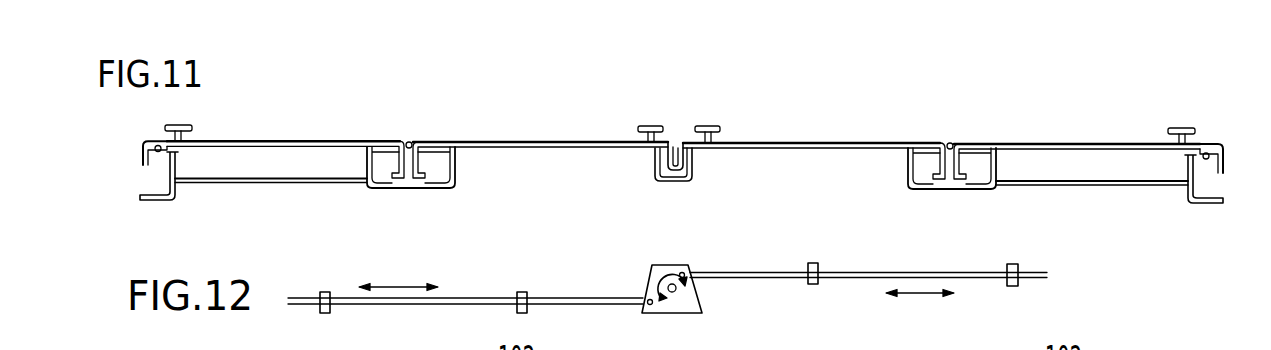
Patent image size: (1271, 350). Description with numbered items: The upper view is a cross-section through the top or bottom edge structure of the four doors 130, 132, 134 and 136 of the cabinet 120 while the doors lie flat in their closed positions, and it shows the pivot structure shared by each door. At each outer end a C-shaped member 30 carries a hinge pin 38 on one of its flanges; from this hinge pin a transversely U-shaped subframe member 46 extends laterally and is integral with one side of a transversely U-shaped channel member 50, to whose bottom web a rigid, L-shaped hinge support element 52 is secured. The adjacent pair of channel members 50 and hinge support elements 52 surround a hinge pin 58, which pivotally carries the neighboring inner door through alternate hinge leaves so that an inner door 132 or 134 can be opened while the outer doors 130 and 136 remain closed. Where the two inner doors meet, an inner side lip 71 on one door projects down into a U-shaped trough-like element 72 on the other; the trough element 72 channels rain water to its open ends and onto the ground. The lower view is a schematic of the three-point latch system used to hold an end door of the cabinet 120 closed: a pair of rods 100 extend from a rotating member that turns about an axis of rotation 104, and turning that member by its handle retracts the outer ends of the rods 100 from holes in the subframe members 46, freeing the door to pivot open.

In FIG. 11, the C-shaped member 30 is at (169, 200).
In FIG. 11, the hinge pin 38 is at (144, 149).
In FIG. 11, the subframe member 46 is at (315, 172).
In FIG. 11, the channel member 50 is at (400, 188).
In FIG. 11, the hinge support element 52 is at (420, 192).
In FIG. 11, the hinge pin 58 is at (410, 142).
In FIG. 11, the inner side lip 71 is at (675, 163).
In FIG. 11, the trough-like element 72 is at (665, 180).
In FIG. 11, the door 130 is at (304, 141).
In FIG. 11, the door 132 is at (525, 142).
In FIG. 11, the door 134 is at (764, 143).
In FIG. 11, the door 136 is at (1078, 145).
In FIG. 12, the rods 100 is at (603, 304).
In FIG. 12, the axis of rotation 104 is at (699, 308).
In FIG. 12, the cabinet 120 is at (1136, 349).